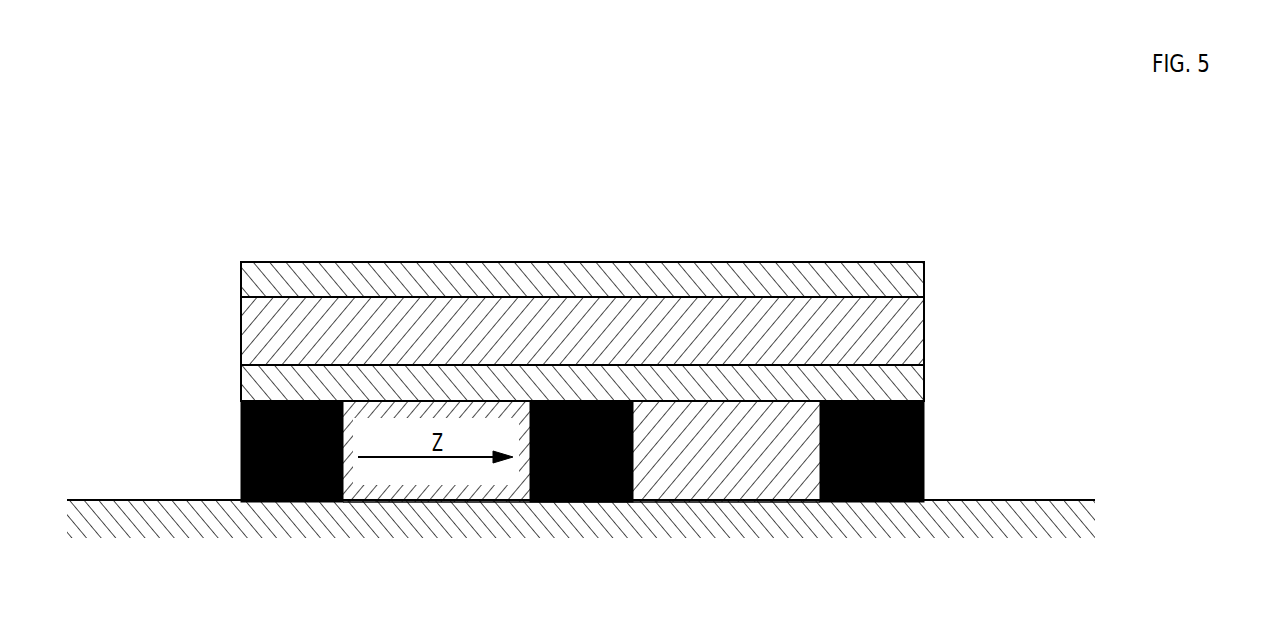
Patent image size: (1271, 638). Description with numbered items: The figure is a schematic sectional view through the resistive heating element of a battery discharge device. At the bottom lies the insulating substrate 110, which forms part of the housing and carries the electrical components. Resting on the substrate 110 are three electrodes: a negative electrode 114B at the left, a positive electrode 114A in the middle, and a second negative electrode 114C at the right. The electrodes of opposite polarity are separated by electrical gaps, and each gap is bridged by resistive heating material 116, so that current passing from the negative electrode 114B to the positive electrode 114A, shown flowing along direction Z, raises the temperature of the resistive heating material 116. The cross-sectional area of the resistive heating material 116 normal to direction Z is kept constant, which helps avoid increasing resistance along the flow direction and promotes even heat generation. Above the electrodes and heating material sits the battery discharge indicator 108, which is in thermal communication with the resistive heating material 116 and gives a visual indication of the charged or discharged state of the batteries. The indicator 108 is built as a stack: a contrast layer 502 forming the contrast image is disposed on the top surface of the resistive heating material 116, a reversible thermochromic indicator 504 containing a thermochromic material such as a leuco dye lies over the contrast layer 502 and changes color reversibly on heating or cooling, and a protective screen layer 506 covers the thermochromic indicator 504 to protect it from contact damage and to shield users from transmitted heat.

The battery discharge indicator 108 is at (727, 236).
The insulating substrate 110 is at (110, 525).
The positive electrode 114A is at (567, 502).
The negative electrode 114B is at (241, 460).
The negative electrode 114C is at (924, 463).
The resistive heating material 116 is at (420, 485).
The contrast layer 502 is at (241, 386).
The reversible thermochromic indicator 504 is at (241, 337).
The protective screen layer 506 is at (241, 287).